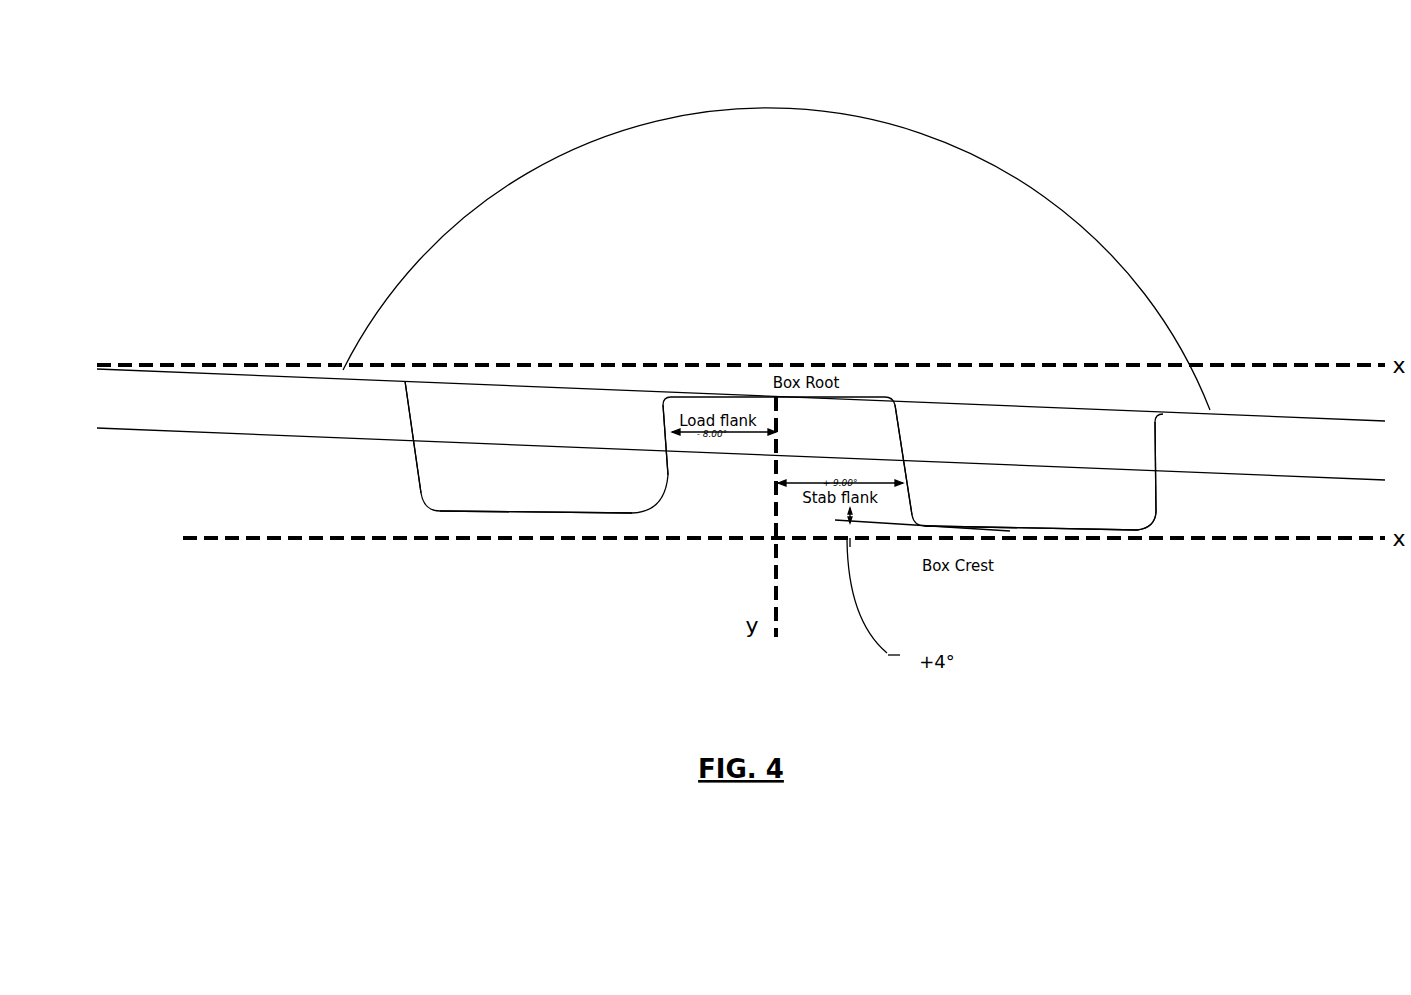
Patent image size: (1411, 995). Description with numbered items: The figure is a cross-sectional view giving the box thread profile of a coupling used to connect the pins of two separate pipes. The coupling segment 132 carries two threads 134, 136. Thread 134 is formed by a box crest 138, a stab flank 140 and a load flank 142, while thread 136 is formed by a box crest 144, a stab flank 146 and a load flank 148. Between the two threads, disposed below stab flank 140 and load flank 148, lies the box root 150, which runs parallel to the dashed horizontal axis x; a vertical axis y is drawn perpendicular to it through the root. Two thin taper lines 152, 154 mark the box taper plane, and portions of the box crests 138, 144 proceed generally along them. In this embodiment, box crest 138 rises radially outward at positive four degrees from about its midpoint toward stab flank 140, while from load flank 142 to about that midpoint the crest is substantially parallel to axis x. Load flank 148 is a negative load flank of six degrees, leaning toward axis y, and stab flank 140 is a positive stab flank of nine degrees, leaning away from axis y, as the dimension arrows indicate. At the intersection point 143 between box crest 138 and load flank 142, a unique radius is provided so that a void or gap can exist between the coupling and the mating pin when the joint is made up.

The coupling segment 132 is at (858, 168).
The thread 134 is at (1025, 443).
The thread 136 is at (545, 425).
The box crest 138 is at (1017, 530).
The stab flank 140 is at (902, 448).
The load flank 142 is at (1157, 485).
The intersection point 143 is at (1143, 530).
The box crest 144 is at (530, 514).
The stab flank 146 is at (420, 480).
The load flank 148 is at (672, 468).
The box root 150 is at (730, 397).
The taper line 152 is at (741, 470).
The taper line 154 is at (741, 407).